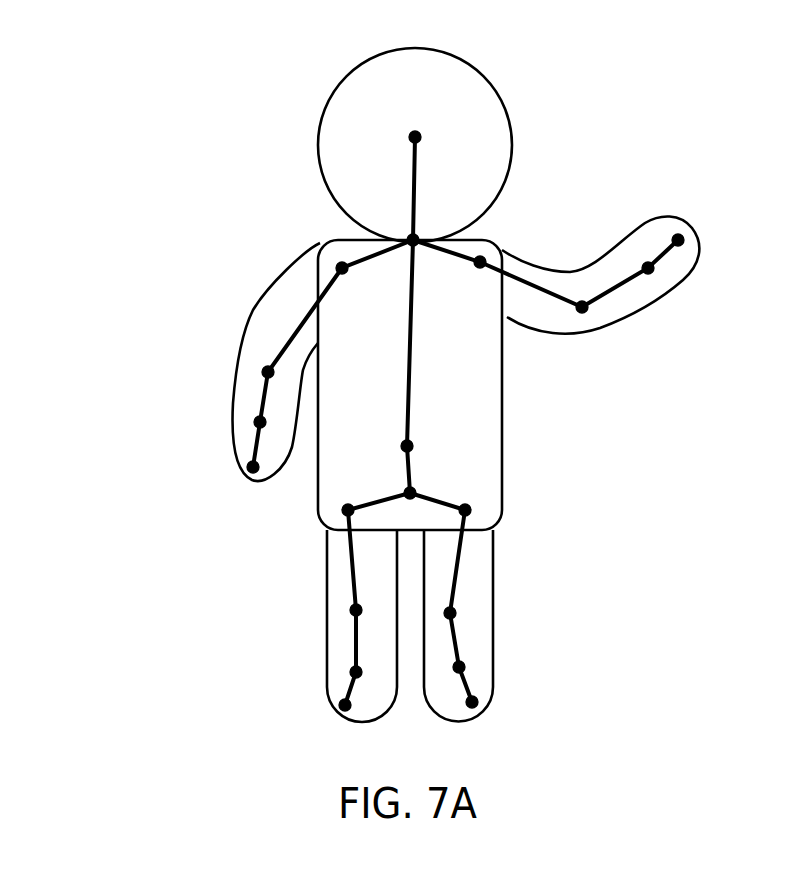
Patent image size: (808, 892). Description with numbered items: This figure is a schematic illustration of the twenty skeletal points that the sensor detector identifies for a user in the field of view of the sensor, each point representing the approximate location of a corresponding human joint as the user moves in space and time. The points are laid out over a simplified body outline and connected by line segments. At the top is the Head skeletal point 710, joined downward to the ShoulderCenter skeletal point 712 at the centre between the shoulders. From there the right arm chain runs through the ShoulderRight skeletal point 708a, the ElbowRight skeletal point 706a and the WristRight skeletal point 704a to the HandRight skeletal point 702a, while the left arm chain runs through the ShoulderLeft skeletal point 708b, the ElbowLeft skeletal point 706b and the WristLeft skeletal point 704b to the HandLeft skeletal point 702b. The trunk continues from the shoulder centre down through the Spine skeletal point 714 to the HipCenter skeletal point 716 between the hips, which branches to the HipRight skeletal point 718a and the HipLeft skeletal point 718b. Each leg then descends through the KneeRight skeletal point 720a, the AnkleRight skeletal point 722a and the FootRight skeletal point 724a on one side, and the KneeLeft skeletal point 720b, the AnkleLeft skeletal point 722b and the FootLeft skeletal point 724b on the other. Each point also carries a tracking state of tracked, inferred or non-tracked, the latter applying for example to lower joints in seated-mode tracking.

The HandRight skeletal point 702a is at (253, 467).
The HandLeft skeletal point 702b is at (678, 240).
The WristRight skeletal point 704a is at (260, 422).
The WristLeft skeletal point 704b is at (648, 268).
The ElbowRight skeletal point 706a is at (268, 372).
The ElbowLeft skeletal point 706b is at (582, 307).
The ShoulderRight skeletal point 708a is at (342, 268).
The ShoulderLeft skeletal point 708b is at (480, 262).
The Head skeletal point 710 is at (415, 137).
The ShoulderCenter skeletal point 712 is at (413, 240).
The Spine skeletal point 714 is at (407, 446).
The HipCenter skeletal point 716 is at (410, 493).
The HipRight skeletal point 718a is at (348, 510).
The HipLeft skeletal point 718b is at (465, 510).
The KneeRight skeletal point 720a is at (356, 610).
The KneeLeft skeletal point 720b is at (450, 613).
The AnkleRight skeletal point 722a is at (356, 672).
The AnkleLeft skeletal point 722b is at (459, 667).
The FootRight skeletal point 724a is at (345, 705).
The FootLeft skeletal point 724b is at (472, 702).